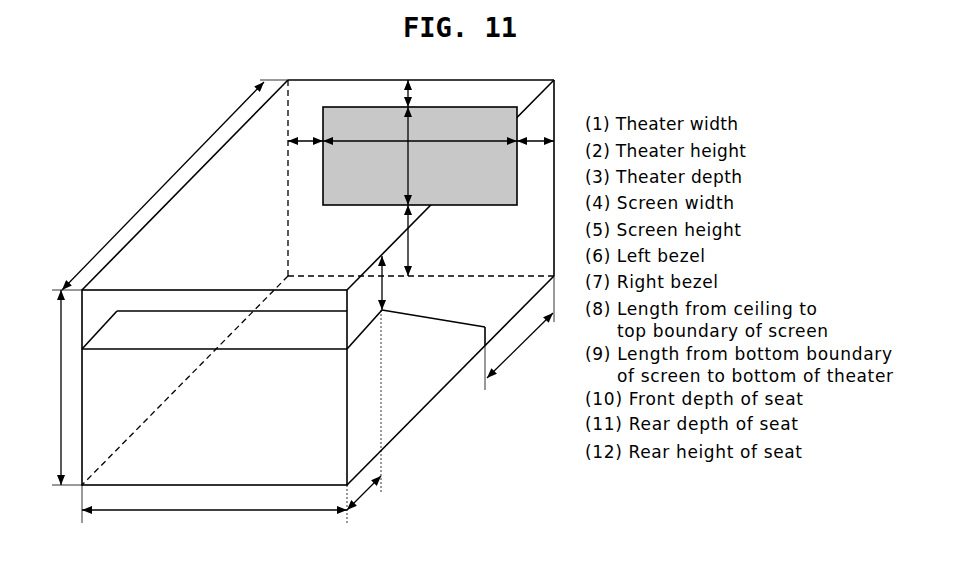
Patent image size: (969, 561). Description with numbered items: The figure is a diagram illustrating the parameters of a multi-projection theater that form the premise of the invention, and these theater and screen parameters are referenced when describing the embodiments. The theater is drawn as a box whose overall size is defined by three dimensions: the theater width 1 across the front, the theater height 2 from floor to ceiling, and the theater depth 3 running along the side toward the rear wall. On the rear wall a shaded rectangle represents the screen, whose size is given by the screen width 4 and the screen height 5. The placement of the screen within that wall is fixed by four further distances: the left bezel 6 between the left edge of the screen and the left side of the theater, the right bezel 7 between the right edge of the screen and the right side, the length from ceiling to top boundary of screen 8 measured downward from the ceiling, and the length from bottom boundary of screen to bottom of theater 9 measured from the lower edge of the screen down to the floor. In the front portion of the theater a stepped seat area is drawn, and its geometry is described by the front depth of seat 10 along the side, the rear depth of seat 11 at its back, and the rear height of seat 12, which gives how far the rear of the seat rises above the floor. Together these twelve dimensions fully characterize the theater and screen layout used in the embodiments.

The theater width 1 is at (214, 514).
The theater height 2 is at (56, 387).
The theater depth 3 is at (175, 185).
The screen width 4 is at (420, 129).
The screen height 5 is at (393, 156).
The left bezel 6 is at (305, 128).
The right bezel 7 is at (535, 128).
The length from ceiling to top boundary of screen 8 is at (392, 93).
The length from bottom boundary of screen to bottom of theater 9 is at (423, 240).
The front depth of seat 10 is at (522, 333).
The rear depth of seat 11 is at (375, 415).
The rear height of seat 12 is at (401, 283).